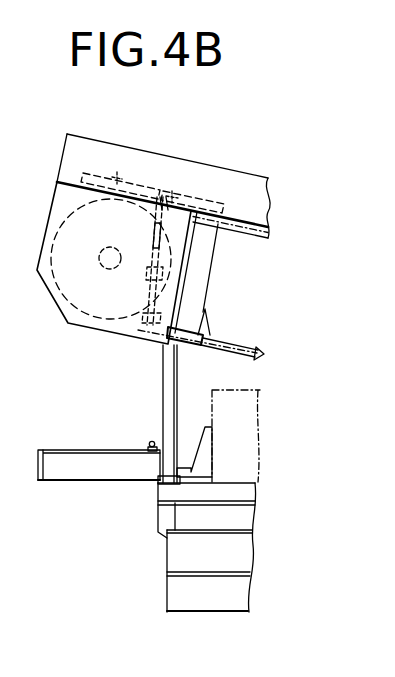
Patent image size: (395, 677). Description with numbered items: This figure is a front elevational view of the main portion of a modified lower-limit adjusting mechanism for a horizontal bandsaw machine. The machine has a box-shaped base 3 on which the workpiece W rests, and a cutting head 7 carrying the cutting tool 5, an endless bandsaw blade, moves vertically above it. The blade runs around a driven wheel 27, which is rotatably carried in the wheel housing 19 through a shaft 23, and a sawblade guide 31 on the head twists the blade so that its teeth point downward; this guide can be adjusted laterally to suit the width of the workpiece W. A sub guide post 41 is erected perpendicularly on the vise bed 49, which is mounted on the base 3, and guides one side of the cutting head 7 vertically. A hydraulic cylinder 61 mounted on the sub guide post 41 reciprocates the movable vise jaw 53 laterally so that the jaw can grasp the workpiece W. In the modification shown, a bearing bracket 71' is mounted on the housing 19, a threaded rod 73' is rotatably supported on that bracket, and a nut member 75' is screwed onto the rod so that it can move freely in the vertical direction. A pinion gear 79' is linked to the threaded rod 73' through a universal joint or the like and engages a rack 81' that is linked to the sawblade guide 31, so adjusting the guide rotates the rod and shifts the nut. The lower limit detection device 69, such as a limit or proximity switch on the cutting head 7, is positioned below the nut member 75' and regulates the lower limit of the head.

The base 3 is at (170, 597).
The cutting tool 5 is at (237, 352).
The cutting head 7 is at (230, 164).
The wheel housing 19 is at (50, 220).
The shaft 23 is at (99, 257).
The driven wheel 27 is at (72, 217).
The sawblade guide 31 is at (212, 253).
The sub guide post 41 is at (167, 403).
The vise bed 49 is at (185, 502).
The movable vise jaw 53 is at (213, 457).
The hydraulic cylinder 61 is at (75, 474).
The lower limit detection device 69 is at (148, 445).
The bearing bracket 71' is at (127, 340).
The threaded rod 73' is at (198, 286).
The nut member 75' is at (130, 261).
The pinion gear 79' is at (189, 164).
The rack 81' is at (120, 151).
The workpiece W is at (230, 390).